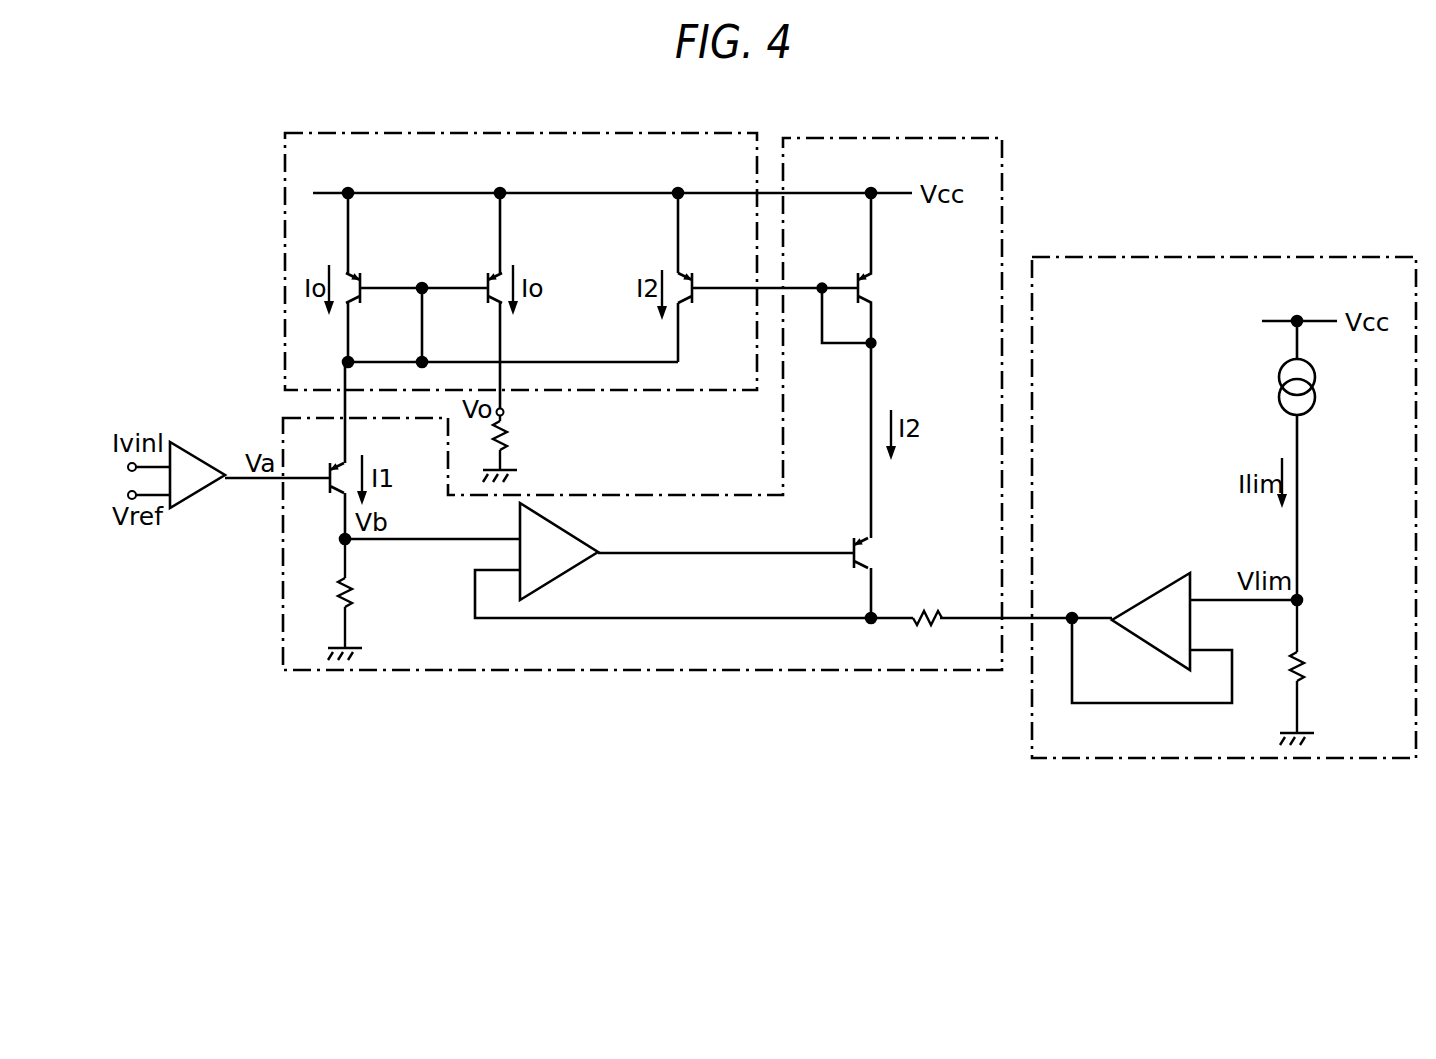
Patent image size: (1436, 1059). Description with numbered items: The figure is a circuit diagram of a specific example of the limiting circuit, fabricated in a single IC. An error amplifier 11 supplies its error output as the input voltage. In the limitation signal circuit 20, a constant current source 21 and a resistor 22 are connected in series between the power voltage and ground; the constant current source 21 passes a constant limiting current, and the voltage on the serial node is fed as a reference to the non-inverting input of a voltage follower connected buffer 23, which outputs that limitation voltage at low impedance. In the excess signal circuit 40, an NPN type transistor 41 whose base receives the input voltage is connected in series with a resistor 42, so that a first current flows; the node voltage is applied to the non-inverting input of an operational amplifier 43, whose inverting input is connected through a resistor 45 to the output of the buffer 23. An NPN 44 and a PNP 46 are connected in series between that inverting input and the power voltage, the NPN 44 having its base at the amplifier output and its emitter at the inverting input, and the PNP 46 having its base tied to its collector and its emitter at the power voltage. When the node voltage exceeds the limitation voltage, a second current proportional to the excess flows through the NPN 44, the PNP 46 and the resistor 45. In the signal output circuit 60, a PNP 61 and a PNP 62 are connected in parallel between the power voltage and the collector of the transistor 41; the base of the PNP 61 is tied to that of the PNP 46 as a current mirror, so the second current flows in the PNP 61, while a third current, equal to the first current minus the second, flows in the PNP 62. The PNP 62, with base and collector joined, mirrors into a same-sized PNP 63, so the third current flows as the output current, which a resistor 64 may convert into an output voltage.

The error amplifier 11 is at (193, 453).
The limitation signal circuit 20 is at (1247, 257).
The constant current source 21 is at (1300, 478).
The resistor 22 is at (1302, 664).
The buffer 23 is at (1148, 597).
The excess signal circuit 40 is at (1002, 201).
The NPN type transistor 41 is at (330, 466).
The resistor 42 is at (352, 596).
The operational amplifier 43 is at (570, 570).
The NPN 44 is at (856, 540).
The resistor 45 is at (932, 612).
The PNP 46 is at (868, 302).
The signal output circuit 60 is at (285, 222).
The PNP 61 is at (684, 302).
The PNP 62 is at (352, 302).
The PNP 63 is at (486, 302).
The resistor 64 is at (508, 436).